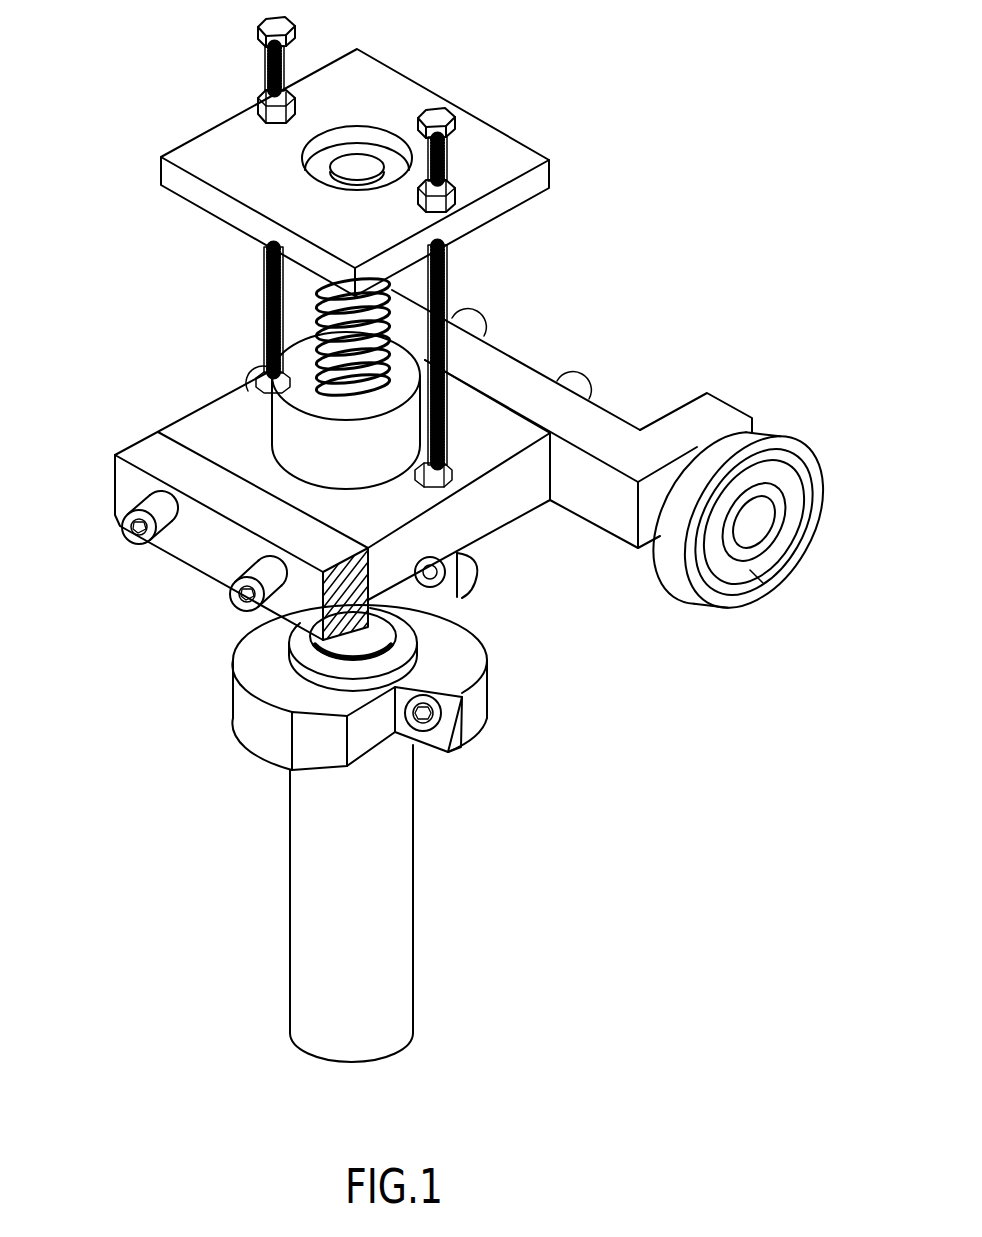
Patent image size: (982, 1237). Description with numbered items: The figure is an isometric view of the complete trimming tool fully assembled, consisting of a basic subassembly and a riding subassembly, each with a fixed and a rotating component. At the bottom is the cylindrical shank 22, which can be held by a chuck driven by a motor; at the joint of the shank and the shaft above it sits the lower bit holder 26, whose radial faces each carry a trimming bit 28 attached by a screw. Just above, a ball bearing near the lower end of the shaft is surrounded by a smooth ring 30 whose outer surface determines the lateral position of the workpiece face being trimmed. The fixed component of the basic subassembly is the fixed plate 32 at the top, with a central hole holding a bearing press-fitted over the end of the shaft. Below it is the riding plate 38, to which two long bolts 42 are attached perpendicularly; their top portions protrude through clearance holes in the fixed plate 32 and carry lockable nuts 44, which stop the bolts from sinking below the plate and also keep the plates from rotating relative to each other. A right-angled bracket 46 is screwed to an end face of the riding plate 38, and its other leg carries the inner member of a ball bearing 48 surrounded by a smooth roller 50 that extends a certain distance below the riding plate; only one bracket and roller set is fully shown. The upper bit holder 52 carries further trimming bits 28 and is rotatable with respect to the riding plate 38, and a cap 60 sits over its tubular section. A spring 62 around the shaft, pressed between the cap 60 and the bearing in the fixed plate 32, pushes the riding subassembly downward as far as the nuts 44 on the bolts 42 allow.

The cylindrical shank 22 is at (400, 963).
The lower bit holder 26 is at (463, 665).
The trimming bit 28 is at (440, 593).
The ring 30 is at (300, 657).
The fixed plate 32 is at (485, 140).
The riding plate 38 is at (195, 427).
The long bolts 42 is at (447, 286).
The lockable nuts 44 is at (450, 193).
The right-angled bracket 46 is at (530, 388).
The ball bearing 48 is at (750, 568).
The roller 50 is at (680, 553).
The upper bit holder 52 is at (480, 557).
The cap 60 is at (300, 430).
The spring 62 is at (313, 318).